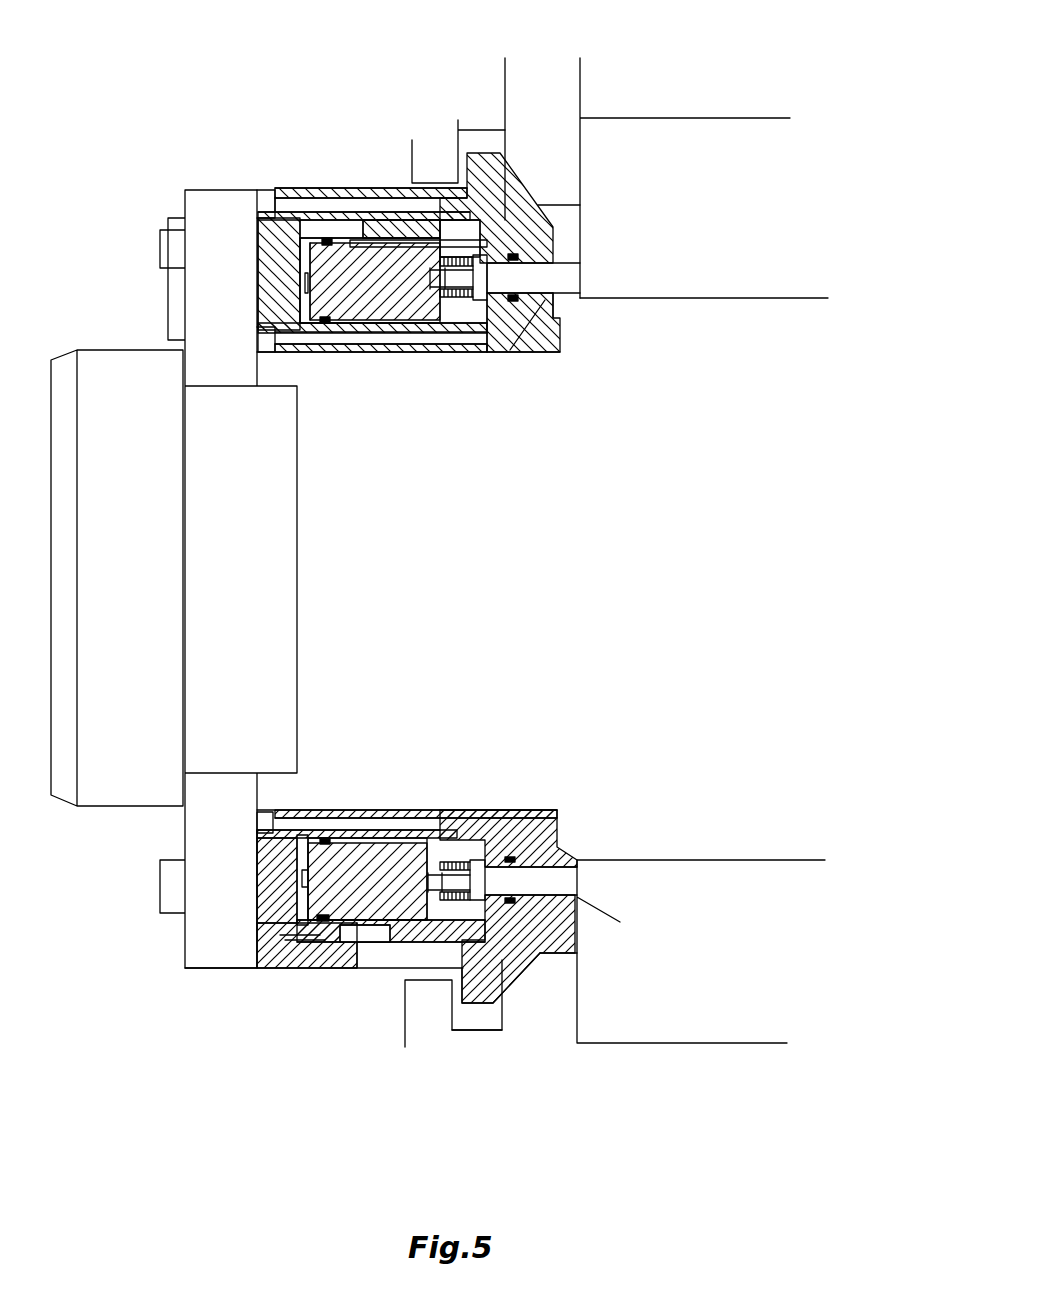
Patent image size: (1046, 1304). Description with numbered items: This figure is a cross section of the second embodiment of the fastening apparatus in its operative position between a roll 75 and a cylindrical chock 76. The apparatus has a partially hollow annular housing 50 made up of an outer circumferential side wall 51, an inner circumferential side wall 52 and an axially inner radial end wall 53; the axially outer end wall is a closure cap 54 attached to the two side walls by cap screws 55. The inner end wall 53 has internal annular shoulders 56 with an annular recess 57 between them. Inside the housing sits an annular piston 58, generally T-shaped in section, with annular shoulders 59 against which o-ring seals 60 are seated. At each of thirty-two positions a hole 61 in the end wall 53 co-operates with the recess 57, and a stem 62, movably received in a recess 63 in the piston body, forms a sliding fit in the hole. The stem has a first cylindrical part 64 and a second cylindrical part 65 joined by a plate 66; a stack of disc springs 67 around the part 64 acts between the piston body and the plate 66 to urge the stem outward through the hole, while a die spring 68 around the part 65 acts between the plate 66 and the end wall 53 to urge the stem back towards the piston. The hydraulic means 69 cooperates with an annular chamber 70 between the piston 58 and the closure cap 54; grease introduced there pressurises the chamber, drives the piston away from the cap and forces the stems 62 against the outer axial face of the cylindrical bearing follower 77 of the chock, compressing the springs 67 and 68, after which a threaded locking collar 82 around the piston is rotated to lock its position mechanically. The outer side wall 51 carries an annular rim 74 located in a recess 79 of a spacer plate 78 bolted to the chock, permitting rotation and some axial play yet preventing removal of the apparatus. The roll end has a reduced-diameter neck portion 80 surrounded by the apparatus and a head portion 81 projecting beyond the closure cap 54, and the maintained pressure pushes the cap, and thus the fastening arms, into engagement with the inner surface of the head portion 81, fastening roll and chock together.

The annular housing 50 is at (268, 977).
The outer circumferential side wall 51 is at (449, 955).
The inner circumferential side wall 52 is at (522, 355).
The axially inner radial end wall 53 is at (543, 337).
The closure cap 54 is at (310, 958).
The cap screws 55 is at (267, 202).
The internal annular shoulders 56 is at (472, 195).
The annular recess 57 is at (530, 245).
The annular piston 58 is at (378, 335).
The annular shoulders 59 is at (342, 198).
The annular o-ring seals 60 is at (323, 238).
The hole 61 is at (580, 267).
The stem 62 is at (585, 288).
The recess 63 is at (412, 325).
The first cylindrical part 64 is at (448, 285).
The second cylindrical part 65 is at (520, 347).
The plate 66 is at (492, 350).
The stack of disc springs 67 is at (450, 816).
The die spring 68 is at (510, 857).
The hydraulic means 69 is at (300, 925).
The annular chamber 70 is at (307, 920).
The annular rim 74 is at (488, 1010).
The roll 75 is at (698, 602).
The cylindrical chock 76 is at (722, 90).
The cylindrical bearing follower 77 is at (740, 960).
The spacer plate 78 is at (550, 1022).
The recess 79 is at (465, 1022).
The neck portion 80 is at (263, 602).
The head portion 81 is at (148, 602).
The threaded locking collar 82 is at (403, 228).